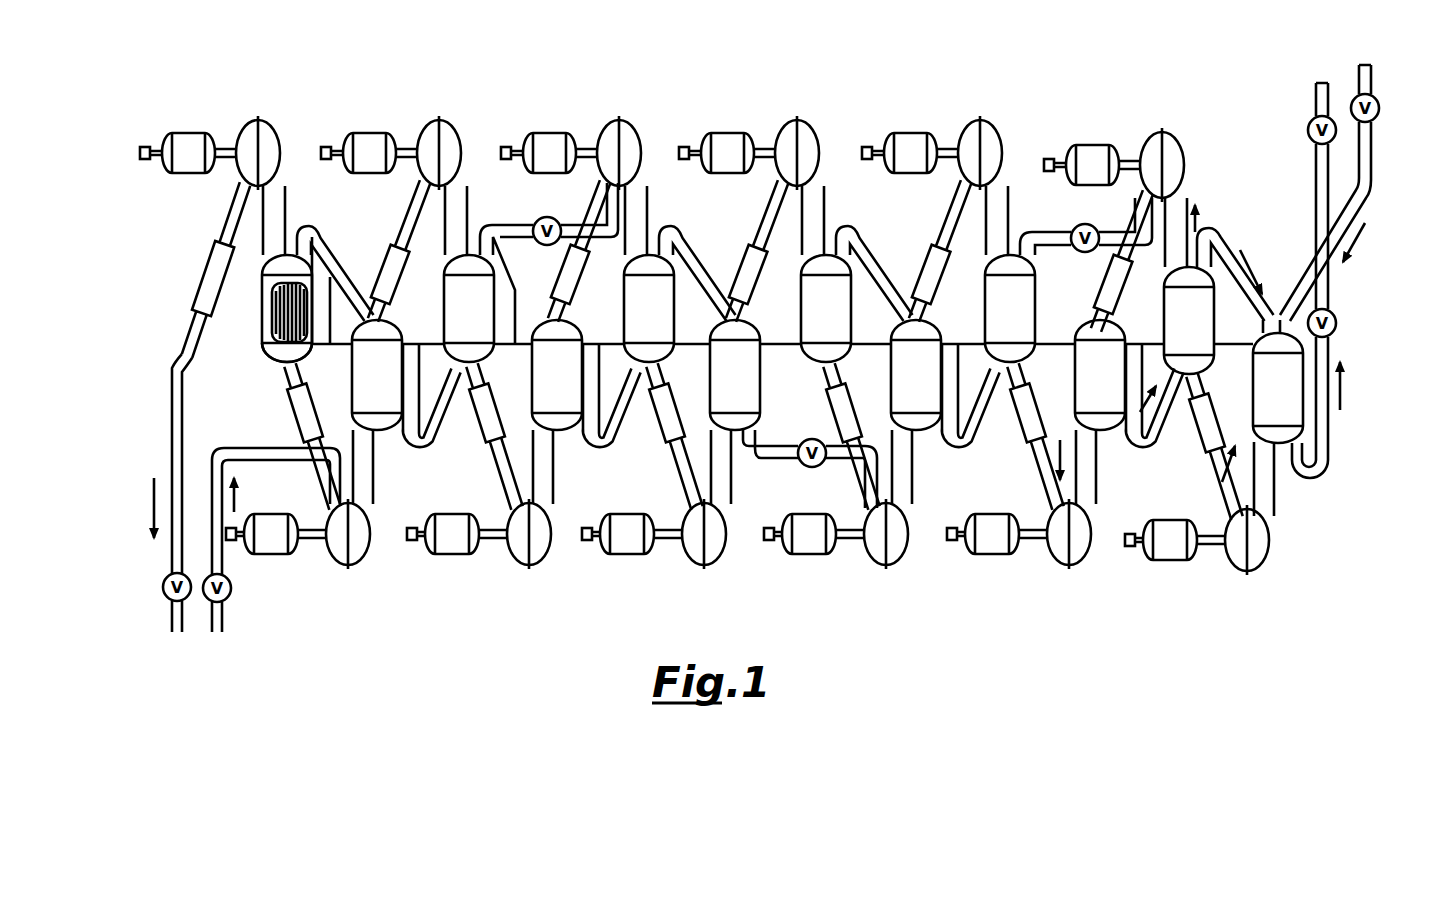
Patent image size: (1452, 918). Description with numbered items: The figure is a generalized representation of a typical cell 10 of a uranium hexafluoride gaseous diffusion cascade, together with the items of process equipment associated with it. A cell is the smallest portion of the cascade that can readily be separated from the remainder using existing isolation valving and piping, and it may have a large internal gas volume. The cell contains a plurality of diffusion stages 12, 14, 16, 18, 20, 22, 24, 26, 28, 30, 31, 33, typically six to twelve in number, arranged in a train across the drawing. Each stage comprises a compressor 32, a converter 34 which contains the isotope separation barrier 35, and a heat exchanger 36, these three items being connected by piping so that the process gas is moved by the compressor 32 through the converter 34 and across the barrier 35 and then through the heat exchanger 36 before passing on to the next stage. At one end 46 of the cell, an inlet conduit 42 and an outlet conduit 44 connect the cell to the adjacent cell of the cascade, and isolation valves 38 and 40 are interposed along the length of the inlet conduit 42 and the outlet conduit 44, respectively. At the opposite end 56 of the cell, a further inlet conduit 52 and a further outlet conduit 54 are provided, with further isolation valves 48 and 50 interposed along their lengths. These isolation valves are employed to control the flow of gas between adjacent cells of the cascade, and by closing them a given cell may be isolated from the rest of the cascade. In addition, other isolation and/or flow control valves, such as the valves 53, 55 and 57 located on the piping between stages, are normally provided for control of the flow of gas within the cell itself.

The cell 10 is at (760, 100).
The diffusion stage 12 is at (1276, 305).
The diffusion stage 14 is at (1173, 405).
The diffusion stage 16 is at (1076, 330).
The diffusion stage 18 is at (1004, 398).
The diffusion stage 20 is at (906, 290).
The diffusion stage 22 is at (797, 366).
The diffusion stage 24 is at (729, 298).
The diffusion stage 26 is at (637, 402).
The diffusion stage 28 is at (536, 318).
The diffusion stage 30 is at (452, 402).
The diffusion stage 31 is at (370, 283).
The compressor 32 is at (276, 133).
The diffusion stage 33 is at (264, 377).
The converter 34 is at (261, 321).
The isotope separation barrier 35 is at (272, 312).
The heat exchanger 36 is at (284, 402).
The isolation valve 38 is at (1380, 112).
The isolation valve 40 is at (1308, 126).
The inlet conduit 42 is at (1372, 160).
The outlet conduit 44 is at (1316, 188).
The end of the cell 46 is at (1342, 292).
The isolation valve 48 is at (232, 601).
The isolation valve 50 is at (163, 597).
The further inlet conduit 52 is at (223, 565).
The flow control valve 53 is at (1078, 225).
The further outlet conduit 54 is at (168, 579).
The flow control valve 55 is at (806, 467).
The opposite end of the cell 56 is at (158, 414).
The flow control valve 57 is at (537, 221).